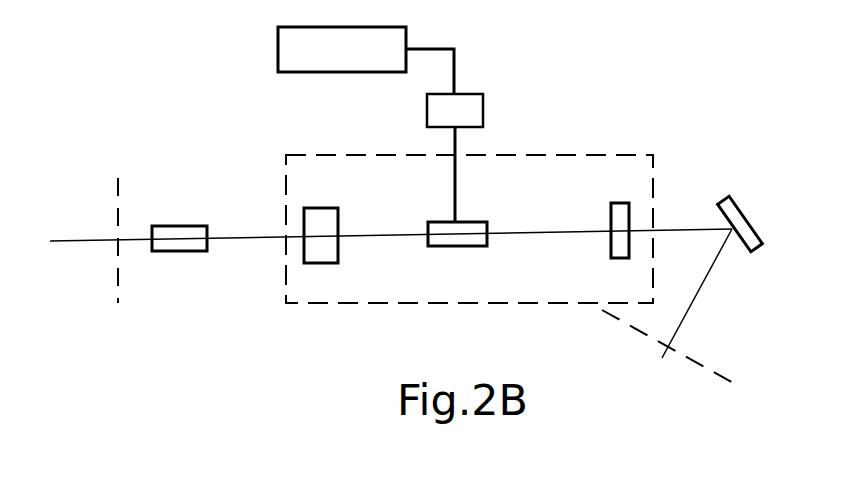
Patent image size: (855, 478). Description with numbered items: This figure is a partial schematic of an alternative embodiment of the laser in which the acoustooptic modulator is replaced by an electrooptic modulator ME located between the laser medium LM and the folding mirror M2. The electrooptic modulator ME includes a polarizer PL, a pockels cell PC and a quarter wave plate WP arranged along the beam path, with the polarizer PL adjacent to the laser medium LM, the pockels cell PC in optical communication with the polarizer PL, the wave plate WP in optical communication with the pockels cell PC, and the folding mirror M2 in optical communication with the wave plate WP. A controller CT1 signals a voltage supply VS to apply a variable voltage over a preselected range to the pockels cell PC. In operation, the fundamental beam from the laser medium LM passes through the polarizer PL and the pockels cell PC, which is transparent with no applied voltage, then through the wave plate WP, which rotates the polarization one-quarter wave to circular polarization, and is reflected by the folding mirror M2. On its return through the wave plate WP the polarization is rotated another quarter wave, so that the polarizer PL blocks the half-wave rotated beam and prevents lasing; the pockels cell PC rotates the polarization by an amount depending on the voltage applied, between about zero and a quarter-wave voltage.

The controller CT1 is at (366, 60).
The voltage supply VS is at (467, 138).
The electrooptic modulator ME is at (469, 202).
The laser medium LM is at (179, 211).
The polarizer PL is at (321, 215).
The pockels cell PC is at (481, 214).
The wave plate WP is at (620, 209).
The folding mirror M2 is at (753, 216).